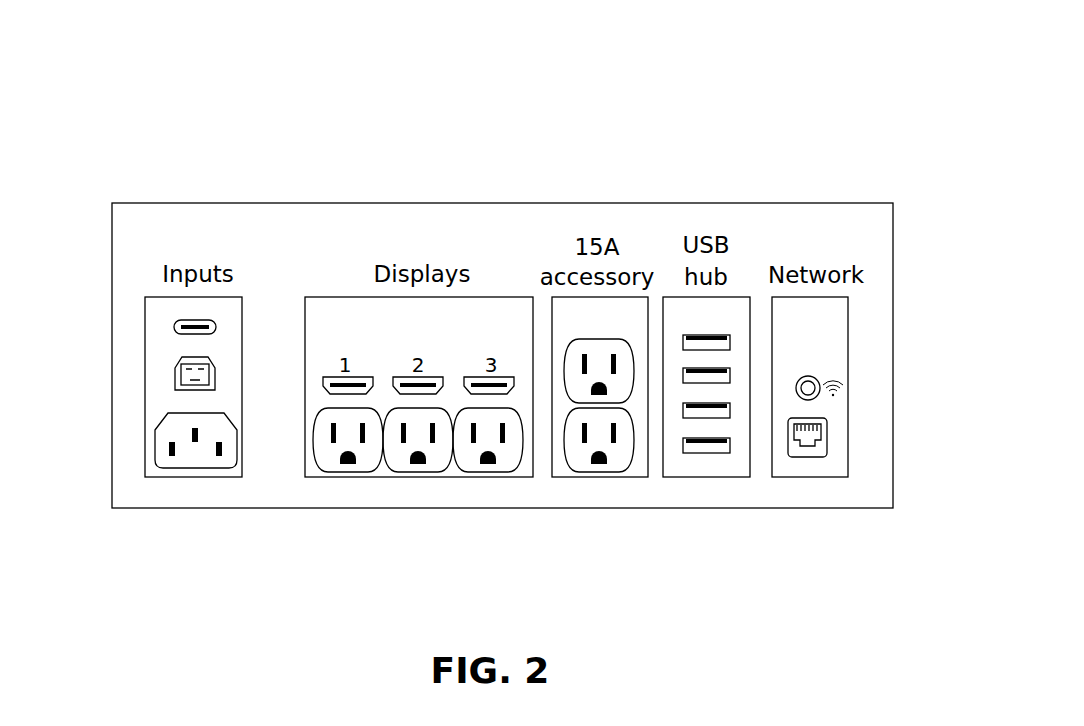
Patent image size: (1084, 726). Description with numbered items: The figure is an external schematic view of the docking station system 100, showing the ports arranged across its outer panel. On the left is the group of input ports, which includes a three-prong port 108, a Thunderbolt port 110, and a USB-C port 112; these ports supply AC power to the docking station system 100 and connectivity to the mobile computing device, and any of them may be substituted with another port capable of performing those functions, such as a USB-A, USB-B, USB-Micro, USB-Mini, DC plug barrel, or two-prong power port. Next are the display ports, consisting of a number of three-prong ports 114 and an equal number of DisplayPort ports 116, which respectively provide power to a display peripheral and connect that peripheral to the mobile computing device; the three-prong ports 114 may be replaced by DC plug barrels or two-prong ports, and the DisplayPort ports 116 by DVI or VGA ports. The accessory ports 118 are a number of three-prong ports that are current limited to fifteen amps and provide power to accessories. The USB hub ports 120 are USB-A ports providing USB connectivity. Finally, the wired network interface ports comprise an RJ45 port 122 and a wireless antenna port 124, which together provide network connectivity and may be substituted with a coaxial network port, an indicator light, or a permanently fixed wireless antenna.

The docking station system 100 is at (731, 92).
The three-prong port 108 is at (195, 468).
The Thunderbolt port 110 is at (177, 373).
The USB-C port 112 is at (175, 328).
The three-prong ports 114 is at (350, 472).
The DisplayPort ports 116 is at (508, 375).
The accessory ports 118 is at (597, 338).
The USB hub ports 120 is at (730, 375).
The RJ45 port 122 is at (804, 457).
The wireless antenna port 124 is at (825, 382).